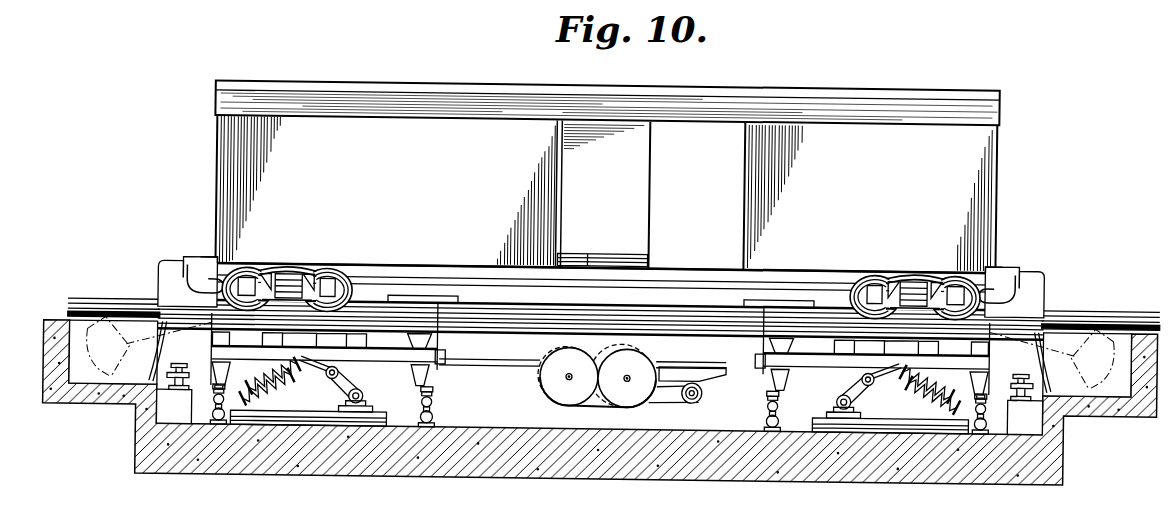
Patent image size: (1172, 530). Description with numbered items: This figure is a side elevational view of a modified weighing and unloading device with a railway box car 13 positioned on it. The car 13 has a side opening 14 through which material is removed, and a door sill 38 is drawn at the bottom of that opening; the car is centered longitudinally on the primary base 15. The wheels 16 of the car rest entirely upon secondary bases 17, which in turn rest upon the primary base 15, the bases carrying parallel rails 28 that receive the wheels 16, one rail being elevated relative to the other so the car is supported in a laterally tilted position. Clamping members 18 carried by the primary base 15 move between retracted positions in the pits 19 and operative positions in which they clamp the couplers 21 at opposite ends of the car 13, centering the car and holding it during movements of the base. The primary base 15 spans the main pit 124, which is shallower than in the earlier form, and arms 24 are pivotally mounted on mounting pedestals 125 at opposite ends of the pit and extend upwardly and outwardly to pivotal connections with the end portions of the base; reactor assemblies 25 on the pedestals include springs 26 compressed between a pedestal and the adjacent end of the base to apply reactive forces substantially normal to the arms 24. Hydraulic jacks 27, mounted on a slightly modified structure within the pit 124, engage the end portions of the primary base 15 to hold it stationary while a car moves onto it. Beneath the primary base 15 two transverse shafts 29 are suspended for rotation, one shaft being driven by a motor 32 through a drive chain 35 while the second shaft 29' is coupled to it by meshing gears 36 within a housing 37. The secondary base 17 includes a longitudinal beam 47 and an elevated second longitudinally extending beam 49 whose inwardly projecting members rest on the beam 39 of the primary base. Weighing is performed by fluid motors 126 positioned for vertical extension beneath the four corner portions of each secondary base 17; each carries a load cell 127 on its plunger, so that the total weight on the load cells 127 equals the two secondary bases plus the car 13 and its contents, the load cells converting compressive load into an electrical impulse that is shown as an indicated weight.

The railway box car 13 is at (997, 188).
The side opening 14 is at (560, 205).
The primary base 15 is at (543, 302).
The wheels 16 is at (263, 270).
The secondary bases 17 is at (443, 358).
The clamping members 18 is at (163, 272).
The pits 19 is at (93, 384).
The couplers 21 is at (200, 262).
The arms 24 is at (346, 389).
The reactor assemblies 25 is at (293, 387).
The springs 26 is at (283, 404).
The hydraulic jacks 27 is at (172, 386).
The rails 28 is at (453, 319).
The shafts 29 is at (569, 376).
The roller 29' is at (627, 378).
The motor 32 is at (704, 397).
The drive chain 35 is at (649, 344).
The meshing gears 36 is at (595, 368).
The housing 37 is at (541, 395).
The door sill 38 is at (602, 252).
The beam 39 is at (520, 363).
The beam 47 is at (398, 363).
The second longitudinally extending beam 49 is at (439, 336).
The main pit 124 is at (551, 436).
The mounting pedestals 125 is at (893, 427).
The fluid motors 126 is at (221, 437).
The load cells 127 is at (767, 394).